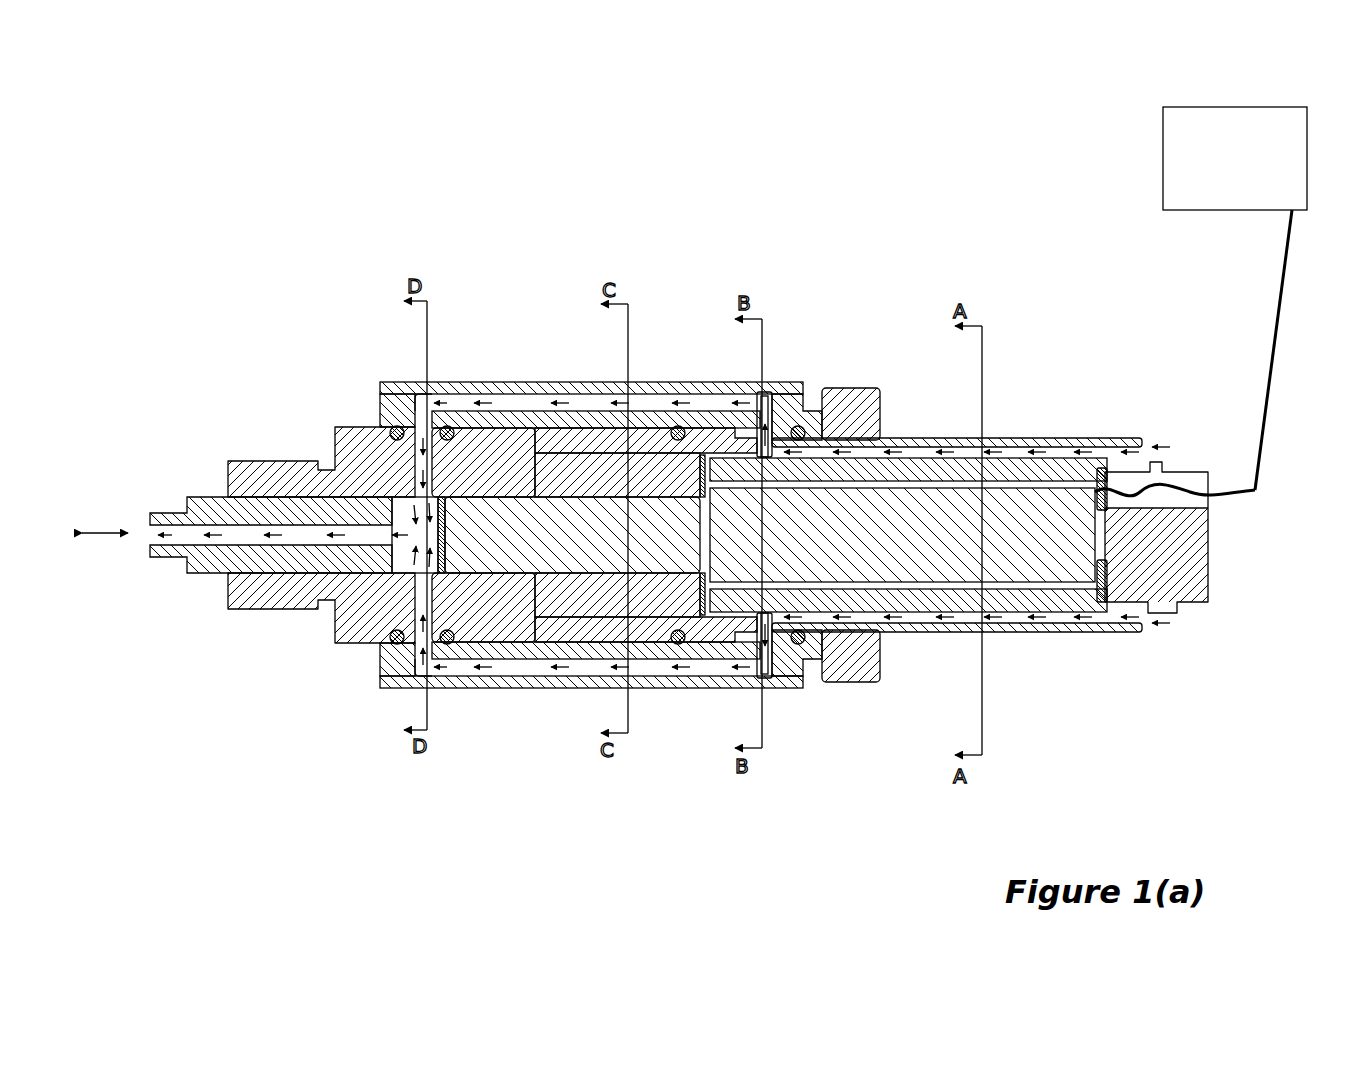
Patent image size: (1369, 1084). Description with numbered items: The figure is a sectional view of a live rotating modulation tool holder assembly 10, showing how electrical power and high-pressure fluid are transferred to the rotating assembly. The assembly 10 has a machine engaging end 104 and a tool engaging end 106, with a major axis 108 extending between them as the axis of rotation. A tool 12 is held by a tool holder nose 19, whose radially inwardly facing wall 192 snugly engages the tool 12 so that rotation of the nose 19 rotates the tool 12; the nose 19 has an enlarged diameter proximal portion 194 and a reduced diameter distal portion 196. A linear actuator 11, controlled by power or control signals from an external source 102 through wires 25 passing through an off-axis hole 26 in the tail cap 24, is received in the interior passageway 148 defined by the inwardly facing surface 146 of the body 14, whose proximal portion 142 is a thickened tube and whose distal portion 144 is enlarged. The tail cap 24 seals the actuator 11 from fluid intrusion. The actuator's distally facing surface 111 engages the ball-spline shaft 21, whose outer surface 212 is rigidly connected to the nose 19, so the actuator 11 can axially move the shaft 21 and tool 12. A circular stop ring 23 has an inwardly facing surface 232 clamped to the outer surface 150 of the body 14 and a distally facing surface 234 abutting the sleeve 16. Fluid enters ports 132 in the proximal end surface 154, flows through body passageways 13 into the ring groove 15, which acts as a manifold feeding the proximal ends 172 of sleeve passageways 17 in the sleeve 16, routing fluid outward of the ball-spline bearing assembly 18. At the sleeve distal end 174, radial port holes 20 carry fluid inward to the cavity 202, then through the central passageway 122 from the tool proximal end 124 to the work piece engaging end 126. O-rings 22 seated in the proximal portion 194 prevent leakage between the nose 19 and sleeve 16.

The tool holder assembly 10 is at (284, 208).
The linear actuator 11 is at (1025, 520).
The tool 12 is at (190, 495).
The body passageways 13 is at (910, 455).
The body 14 is at (712, 440).
The ring groove 15 is at (773, 430).
The sleeve 16 is at (573, 388).
The sleeve passageways 17 is at (473, 405).
The rotary ball-spline bearing assembly 18 is at (555, 588).
The tool holder nose 19 is at (375, 598).
The port holes 20 is at (423, 620).
The ball-spline shaft 21 is at (618, 543).
The O-rings 22 is at (445, 425).
The circular stop ring 23 is at (858, 662).
The tail cap 24 is at (1130, 604).
The control wires 25 is at (1223, 487).
The off-axis hole 26 is at (1160, 487).
The external power source or control system 102 is at (1156, 143).
The machine engaging end 104 is at (1302, 672).
The tool engaging end 106 is at (155, 592).
The major axis 108 is at (107, 515).
The distally facing surface of linear actuator 111 is at (723, 455).
The central passageway 122 is at (175, 545).
The proximal end of tool 124 is at (353, 605).
The work piece engaging end 126 is at (166, 513).
The ports 132 is at (1140, 625).
The proximal portion of body 142 is at (1110, 434).
The distal portion of body 144 is at (661, 425).
The radially inwardly facing surface 146 is at (815, 603).
The interior passageway 148 is at (890, 588).
The radially outwardly facing surface 150 is at (1040, 440).
The proximal end surface 154 is at (1128, 604).
The proximal ends of sleeve passageways 172 is at (769, 400).
The distal end of sleeve 174 is at (380, 677).
The radially inwardly facing wall 192 is at (412, 497).
The proximal portion surface 194 is at (352, 645).
The distal portion 196 is at (278, 610).
The cavity 202 is at (405, 513).
The radially outwardly facing surface of ball-spline shaft 212 is at (486, 486).
The radially inwardly facing surface of stop ring 232 is at (895, 448).
The distally facing surface of stop ring 234 is at (822, 400).